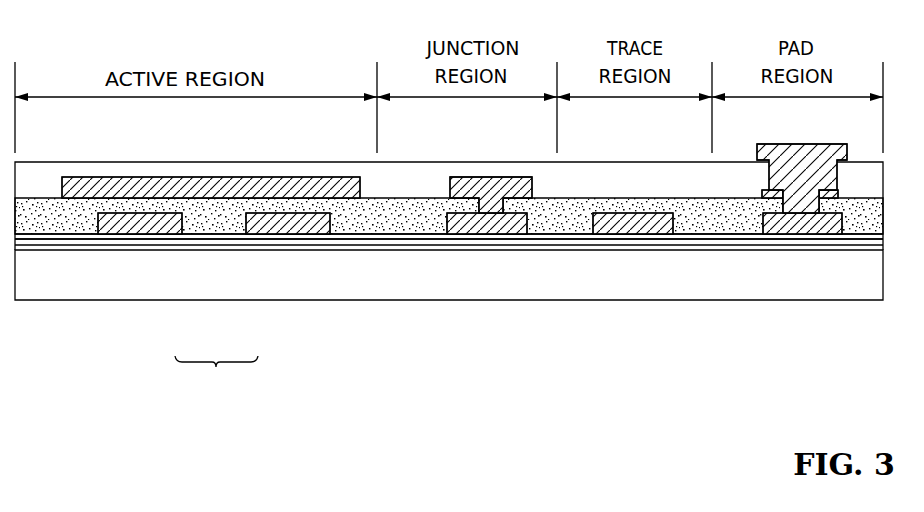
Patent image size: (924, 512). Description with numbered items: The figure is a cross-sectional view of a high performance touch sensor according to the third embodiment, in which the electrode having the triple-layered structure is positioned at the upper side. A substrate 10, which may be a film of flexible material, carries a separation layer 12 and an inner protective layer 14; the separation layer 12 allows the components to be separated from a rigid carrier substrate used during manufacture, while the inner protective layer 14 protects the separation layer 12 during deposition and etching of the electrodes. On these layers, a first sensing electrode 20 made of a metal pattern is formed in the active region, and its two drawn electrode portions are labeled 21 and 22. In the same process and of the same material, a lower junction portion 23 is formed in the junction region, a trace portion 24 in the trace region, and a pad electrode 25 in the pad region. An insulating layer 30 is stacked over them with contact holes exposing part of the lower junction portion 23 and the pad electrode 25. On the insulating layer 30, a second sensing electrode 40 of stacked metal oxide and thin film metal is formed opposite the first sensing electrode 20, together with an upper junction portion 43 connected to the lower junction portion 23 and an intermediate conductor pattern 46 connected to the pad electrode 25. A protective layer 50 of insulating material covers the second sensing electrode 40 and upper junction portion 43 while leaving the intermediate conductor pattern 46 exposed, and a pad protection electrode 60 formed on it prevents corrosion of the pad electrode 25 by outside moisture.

The substrate 10 is at (415, 295).
The separation layer 12 is at (67, 248).
The inner protective layer 14 is at (100, 238).
The first sensing electrode 20 is at (216, 377).
The first lower electrode 21 is at (147, 227).
The second lower electrode 22 is at (282, 227).
The lower junction portion 23 is at (513, 227).
The trace portion 24 is at (633, 225).
The pad electrode 25 is at (812, 225).
The insulating layer 30 is at (38, 217).
The second sensing electrode 40 is at (338, 190).
The upper junction portion 43 is at (493, 197).
The intermediate conductor pattern 46 is at (792, 207).
The protective layer 50 is at (717, 183).
The pad protection electrode 60 is at (832, 172).